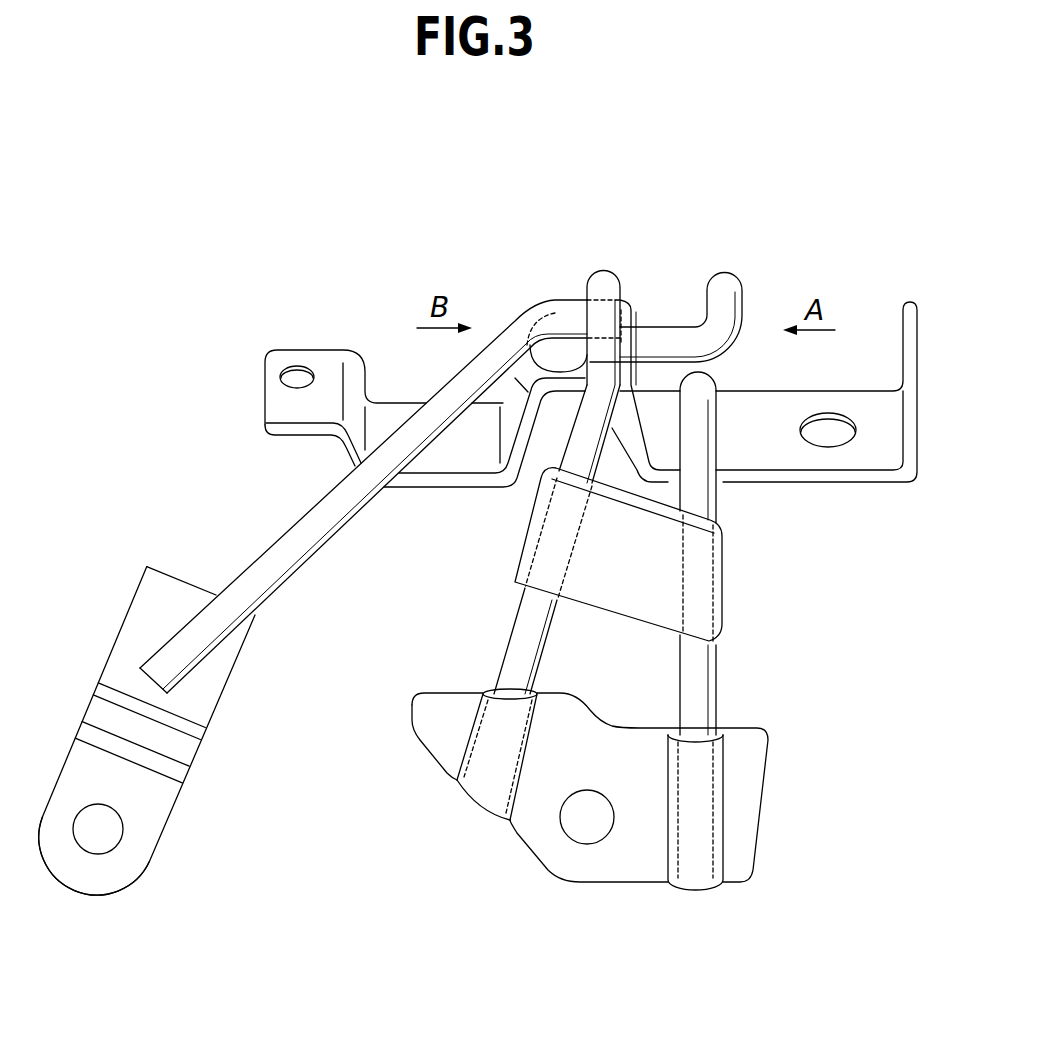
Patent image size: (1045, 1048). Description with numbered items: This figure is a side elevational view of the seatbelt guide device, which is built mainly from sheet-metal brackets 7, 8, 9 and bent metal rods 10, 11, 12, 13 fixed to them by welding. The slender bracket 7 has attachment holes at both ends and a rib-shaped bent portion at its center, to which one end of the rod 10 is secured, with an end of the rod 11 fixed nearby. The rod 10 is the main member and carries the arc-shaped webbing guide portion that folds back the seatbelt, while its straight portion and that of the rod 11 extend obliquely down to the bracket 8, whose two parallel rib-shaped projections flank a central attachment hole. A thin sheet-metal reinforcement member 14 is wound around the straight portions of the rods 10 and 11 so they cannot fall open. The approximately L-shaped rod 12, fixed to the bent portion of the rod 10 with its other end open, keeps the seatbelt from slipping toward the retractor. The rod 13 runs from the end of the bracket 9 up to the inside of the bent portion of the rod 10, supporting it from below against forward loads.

The bracket 7 is at (433, 491).
The bracket 8 is at (528, 847).
The bracket 9 is at (172, 825).
The rod 10 is at (505, 653).
The rod 11 is at (703, 692).
The rod 12 is at (658, 327).
The rod 13 is at (285, 533).
The reinforcement member 14 is at (655, 587).